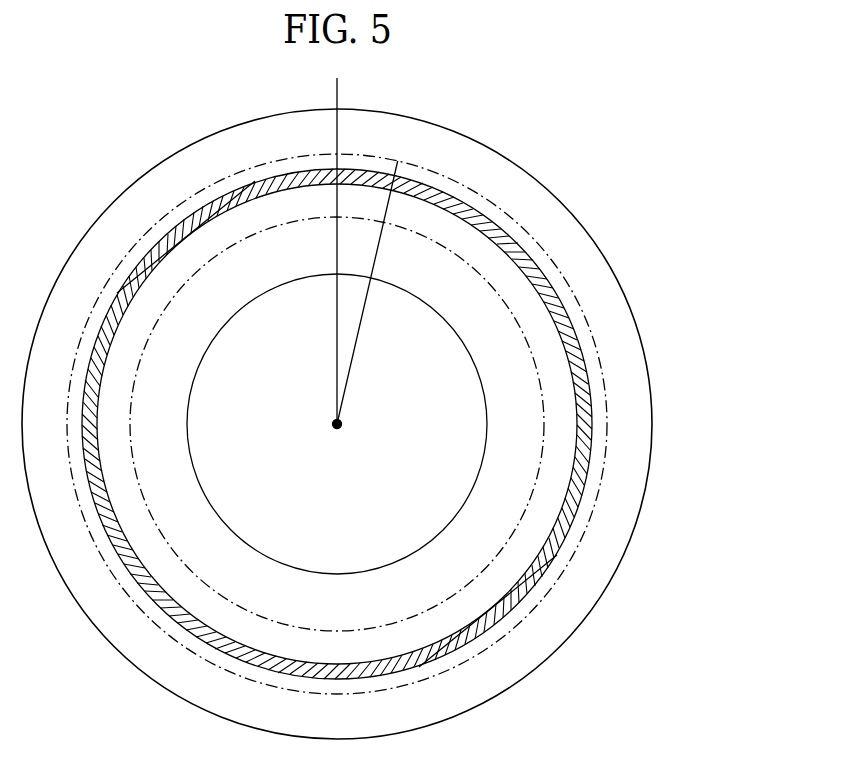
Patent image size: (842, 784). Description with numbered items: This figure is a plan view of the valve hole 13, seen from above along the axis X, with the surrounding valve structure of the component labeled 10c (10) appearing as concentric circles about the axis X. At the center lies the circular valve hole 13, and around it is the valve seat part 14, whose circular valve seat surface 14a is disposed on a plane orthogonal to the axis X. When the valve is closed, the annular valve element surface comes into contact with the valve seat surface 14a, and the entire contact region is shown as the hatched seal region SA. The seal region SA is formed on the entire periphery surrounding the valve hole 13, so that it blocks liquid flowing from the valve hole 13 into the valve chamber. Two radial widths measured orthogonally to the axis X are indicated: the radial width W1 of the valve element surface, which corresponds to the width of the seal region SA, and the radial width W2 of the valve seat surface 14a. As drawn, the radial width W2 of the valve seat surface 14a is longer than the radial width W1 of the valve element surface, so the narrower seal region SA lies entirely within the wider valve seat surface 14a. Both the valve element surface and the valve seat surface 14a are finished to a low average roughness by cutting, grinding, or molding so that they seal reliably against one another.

The lens 10 is at (358, 409).
The third lens 10c is at (581, 139).
The valve hole 13 is at (487, 397).
The valve seat part 14 is at (553, 610).
The valve seat surface 14a is at (177, 220).
The seal region SA is at (512, 218).
The axis X is at (337, 430).
The radial width of the valve element surface W1 is at (351, 159).
The radial width of the valve seat surface W2 is at (381, 292).